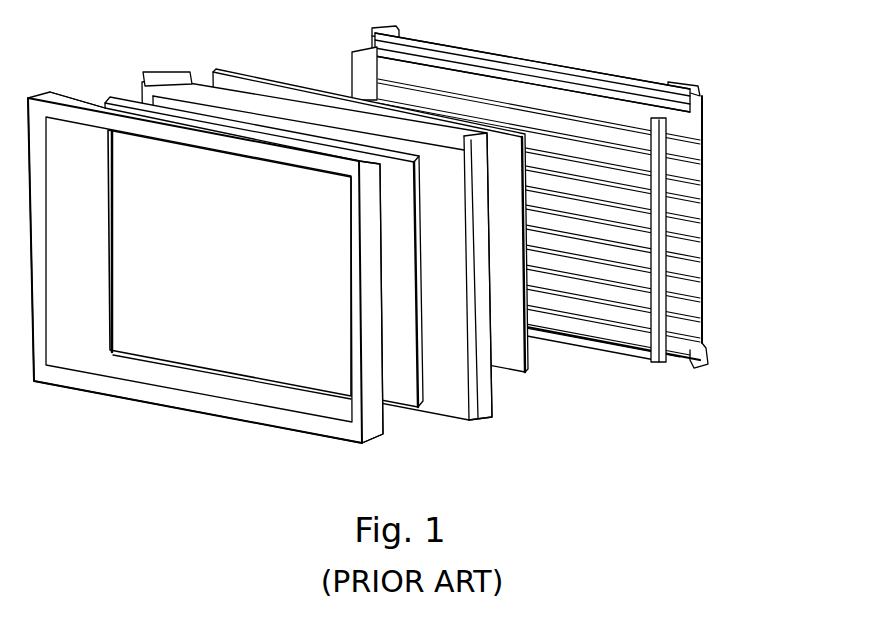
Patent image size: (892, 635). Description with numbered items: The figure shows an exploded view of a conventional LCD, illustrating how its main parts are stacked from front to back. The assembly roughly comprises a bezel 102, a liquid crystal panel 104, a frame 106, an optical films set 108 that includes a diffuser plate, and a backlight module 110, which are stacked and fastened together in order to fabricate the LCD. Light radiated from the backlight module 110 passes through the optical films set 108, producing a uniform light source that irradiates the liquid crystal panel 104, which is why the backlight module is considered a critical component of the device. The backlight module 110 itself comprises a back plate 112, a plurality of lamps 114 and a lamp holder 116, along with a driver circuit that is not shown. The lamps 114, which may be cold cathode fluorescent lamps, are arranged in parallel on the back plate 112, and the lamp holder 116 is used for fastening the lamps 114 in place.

The bezel 102 is at (380, 421).
The liquid crystal panel 104 is at (424, 412).
The frame 106 is at (492, 395).
The optical films set 108 is at (538, 371).
The backlight module 110 is at (524, 197).
The back plate 112 is at (704, 300).
The lamps 114 is at (682, 130).
The lamp holder 116 is at (667, 203).